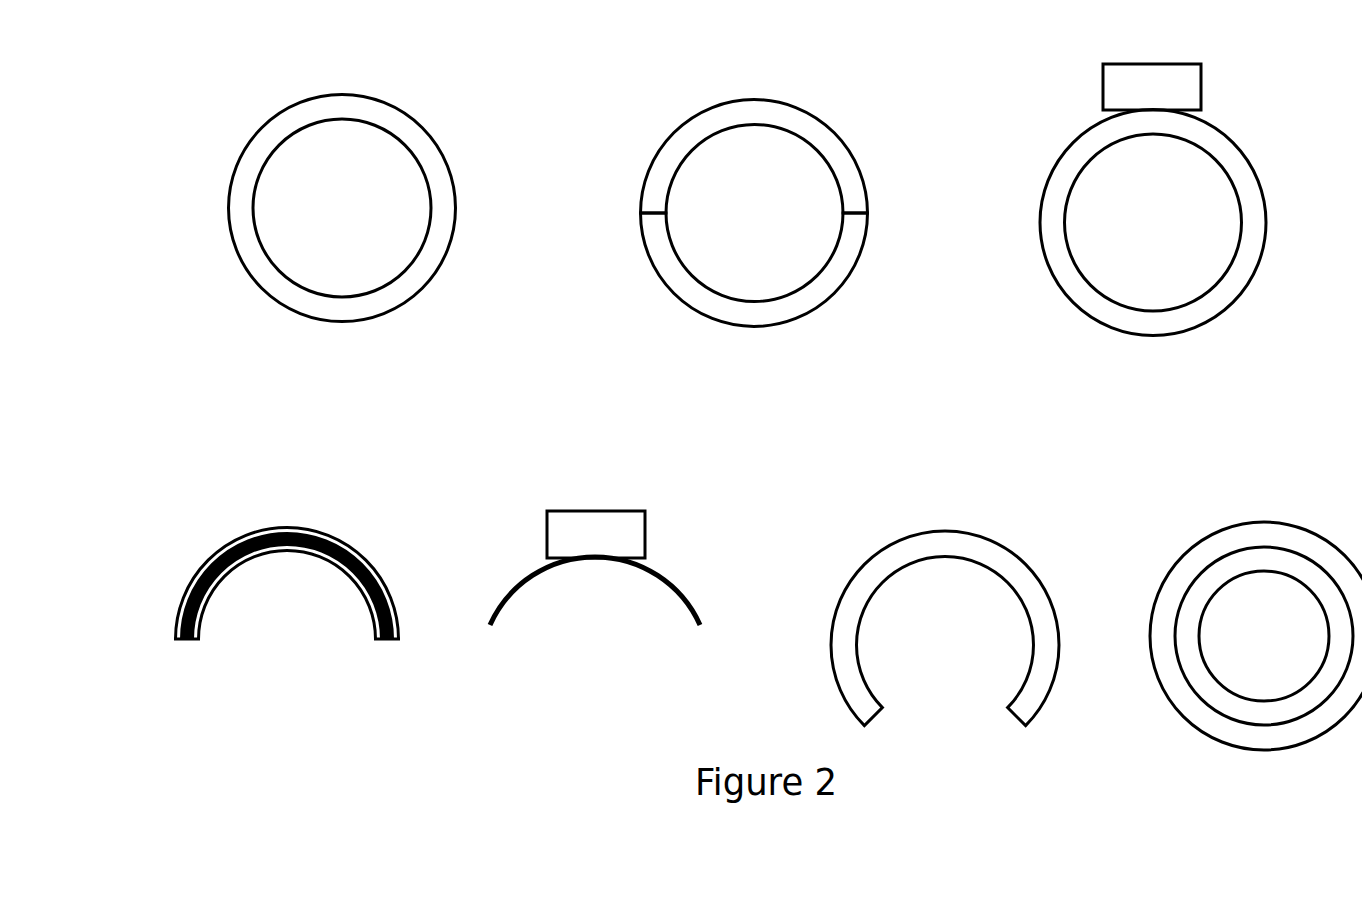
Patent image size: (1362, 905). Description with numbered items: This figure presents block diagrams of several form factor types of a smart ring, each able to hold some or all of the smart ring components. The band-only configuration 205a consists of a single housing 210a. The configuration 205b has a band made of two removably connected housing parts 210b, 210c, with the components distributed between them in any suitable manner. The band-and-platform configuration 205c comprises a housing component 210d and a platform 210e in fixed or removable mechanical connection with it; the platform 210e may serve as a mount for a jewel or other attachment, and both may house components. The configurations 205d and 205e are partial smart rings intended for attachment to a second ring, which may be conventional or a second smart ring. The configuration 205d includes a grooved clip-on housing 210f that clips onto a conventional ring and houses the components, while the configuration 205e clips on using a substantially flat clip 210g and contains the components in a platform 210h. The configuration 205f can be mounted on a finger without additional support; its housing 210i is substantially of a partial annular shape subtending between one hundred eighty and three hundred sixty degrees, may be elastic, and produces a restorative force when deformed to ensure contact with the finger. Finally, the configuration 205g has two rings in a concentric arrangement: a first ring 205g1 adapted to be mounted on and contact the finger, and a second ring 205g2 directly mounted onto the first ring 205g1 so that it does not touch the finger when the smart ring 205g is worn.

The band-only configuration 205a is at (290, 87).
The housing 210a is at (232, 177).
The two-part band configuration 205b is at (705, 87).
The housing part 210b is at (648, 175).
The housing part 210c is at (650, 268).
The band-and-platform configuration 205c is at (1057, 87).
The housing component 210d is at (1048, 175).
The platform 210e is at (1200, 80).
The partial smart ring configuration 205d is at (253, 511).
The grooved clip-on housing 210f is at (185, 587).
The partial smart ring configuration 205e is at (526, 494).
The flat clip 210g is at (512, 587).
The platform 210h is at (645, 525).
The partial annular configuration 205f is at (909, 496).
The housing 210i is at (847, 593).
The two-ring configuration 205g is at (1209, 494).
The first ring 205g1 is at (1287, 573).
The second ring 205g2 is at (1188, 708).